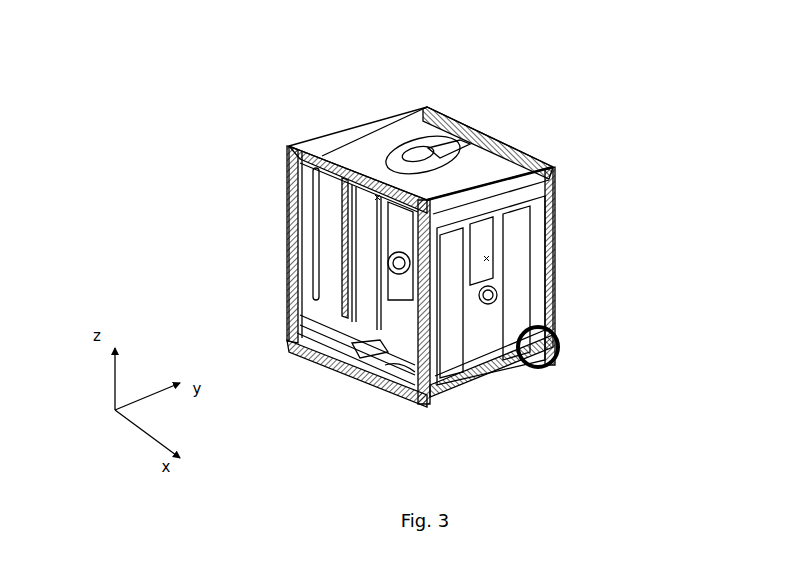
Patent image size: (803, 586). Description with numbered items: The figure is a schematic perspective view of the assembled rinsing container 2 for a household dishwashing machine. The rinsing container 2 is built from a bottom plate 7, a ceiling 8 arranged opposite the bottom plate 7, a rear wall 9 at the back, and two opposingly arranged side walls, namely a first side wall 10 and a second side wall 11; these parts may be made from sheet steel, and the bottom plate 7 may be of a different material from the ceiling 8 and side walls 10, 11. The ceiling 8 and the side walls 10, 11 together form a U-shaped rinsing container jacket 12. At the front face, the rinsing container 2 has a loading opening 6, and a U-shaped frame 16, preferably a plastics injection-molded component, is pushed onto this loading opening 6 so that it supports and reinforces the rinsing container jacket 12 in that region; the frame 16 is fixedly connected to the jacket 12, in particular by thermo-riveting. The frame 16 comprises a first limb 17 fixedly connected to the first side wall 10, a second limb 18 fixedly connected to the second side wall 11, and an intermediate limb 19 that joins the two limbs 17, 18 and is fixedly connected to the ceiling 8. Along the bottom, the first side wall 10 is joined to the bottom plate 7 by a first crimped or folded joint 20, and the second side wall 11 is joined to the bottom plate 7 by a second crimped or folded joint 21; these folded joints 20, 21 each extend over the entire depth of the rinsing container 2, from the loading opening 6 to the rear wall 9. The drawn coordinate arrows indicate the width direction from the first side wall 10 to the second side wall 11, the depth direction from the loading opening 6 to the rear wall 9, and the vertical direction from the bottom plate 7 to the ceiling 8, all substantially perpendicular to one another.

The rinsing container 2 is at (414, 86).
The loading opening 6 is at (240, 316).
The bottom plate 7 is at (505, 380).
The ceiling 8 is at (514, 138).
The rear wall 9 is at (490, 136).
The first side wall 10 is at (368, 258).
The second side wall 11 is at (517, 226).
The rinsing container jacket 12 is at (365, 152).
The frame 16 is at (309, 144).
The first limb 17 is at (289, 248).
The second limb 18 is at (497, 292).
The intermediate limb 19 is at (452, 139).
The first folded joint 20 is at (330, 366).
The second folded joint 21 is at (455, 392).